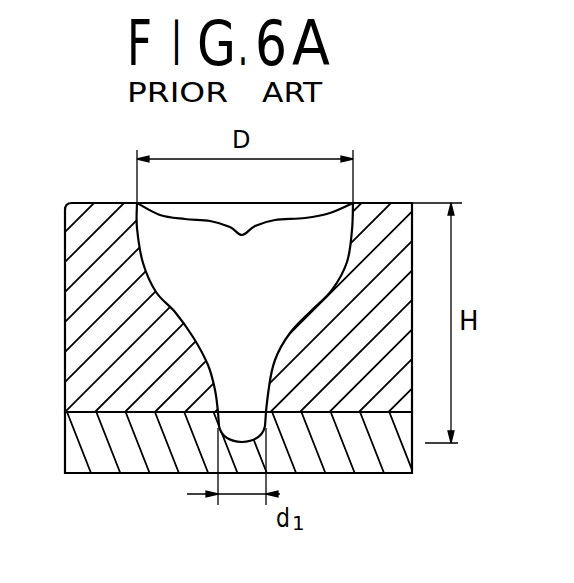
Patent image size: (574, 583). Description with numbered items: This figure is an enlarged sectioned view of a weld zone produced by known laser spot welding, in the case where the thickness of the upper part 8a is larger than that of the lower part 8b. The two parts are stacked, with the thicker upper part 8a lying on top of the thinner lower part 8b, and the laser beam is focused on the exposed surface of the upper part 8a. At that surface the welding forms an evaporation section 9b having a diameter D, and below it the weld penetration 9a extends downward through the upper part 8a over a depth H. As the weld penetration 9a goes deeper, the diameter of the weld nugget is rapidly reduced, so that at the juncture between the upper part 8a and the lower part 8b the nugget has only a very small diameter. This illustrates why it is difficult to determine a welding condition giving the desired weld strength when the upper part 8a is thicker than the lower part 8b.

The upper part 8a is at (78, 208).
The lower part 8b is at (105, 462).
The weld penetration 9a is at (330, 248).
The evaporation section 9b is at (323, 208).